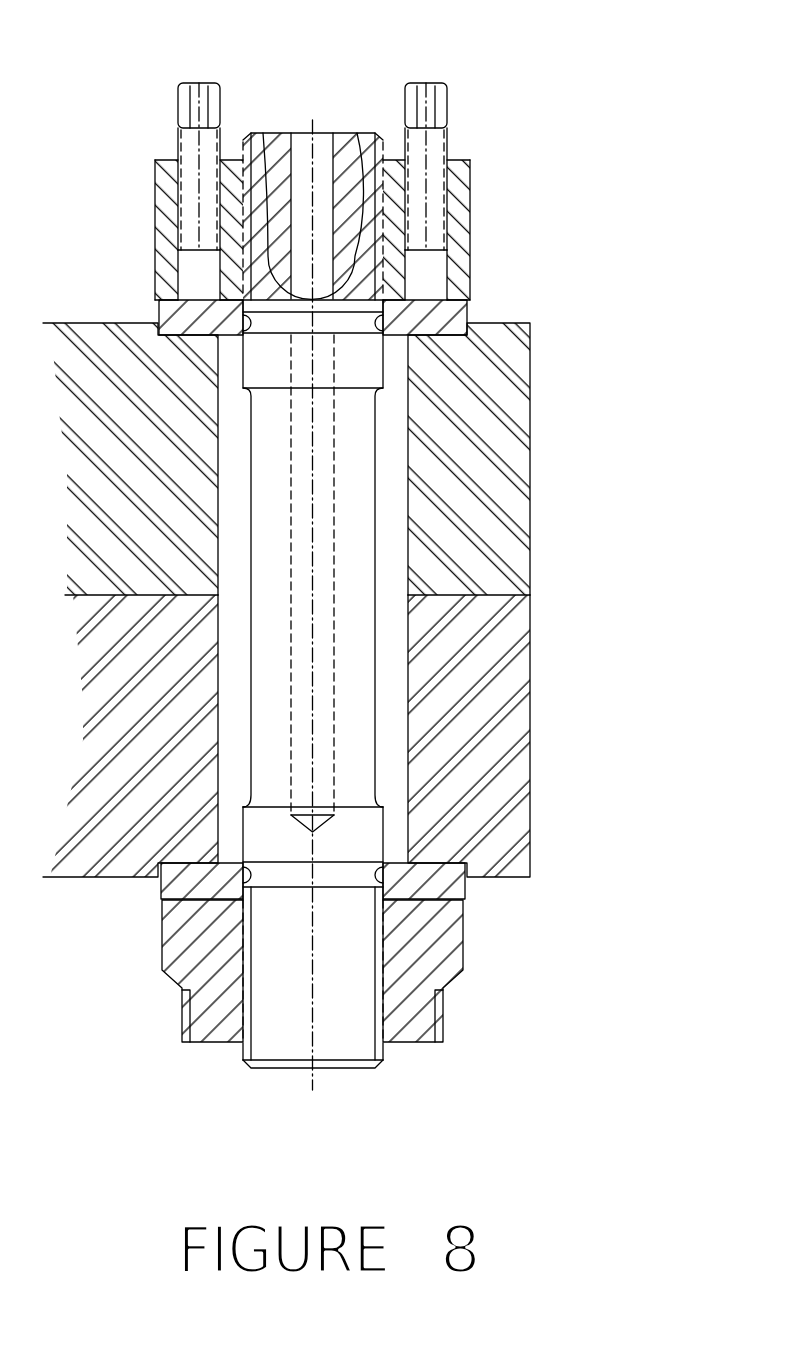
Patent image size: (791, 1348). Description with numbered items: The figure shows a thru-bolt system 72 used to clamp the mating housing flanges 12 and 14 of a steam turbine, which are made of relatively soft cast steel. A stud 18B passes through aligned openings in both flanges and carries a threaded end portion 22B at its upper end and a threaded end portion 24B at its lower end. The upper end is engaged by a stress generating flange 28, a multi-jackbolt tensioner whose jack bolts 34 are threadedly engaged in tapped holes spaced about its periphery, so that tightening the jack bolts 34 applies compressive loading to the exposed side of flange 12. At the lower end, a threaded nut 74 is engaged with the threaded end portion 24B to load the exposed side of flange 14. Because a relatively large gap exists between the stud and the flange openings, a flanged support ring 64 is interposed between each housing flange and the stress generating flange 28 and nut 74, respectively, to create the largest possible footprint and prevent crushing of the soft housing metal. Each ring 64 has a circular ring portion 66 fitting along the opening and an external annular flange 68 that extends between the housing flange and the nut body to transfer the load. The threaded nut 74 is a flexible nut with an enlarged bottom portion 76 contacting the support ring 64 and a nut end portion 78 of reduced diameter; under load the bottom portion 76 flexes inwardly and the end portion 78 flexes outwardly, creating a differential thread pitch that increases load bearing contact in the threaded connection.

The flange 12 is at (350, 459).
The flange 14 is at (350, 732).
The stud 18B is at (459, 575).
The threaded end portion 22B is at (313, 545).
The threaded end portion 24B is at (280, 976).
The stress generating flange 28 is at (371, 230).
The jack bolt 34 is at (310, 125).
The flanged support ring 64 is at (487, 593).
The circular ring portion 66 is at (417, 605).
The annular flange 68 is at (132, 570).
The thru-bolt system 72 is at (528, 213).
The threaded nut 74 is at (487, 971).
The enlarged bottom portion 76 is at (150, 971).
The nut end portion 78 is at (250, 1051).